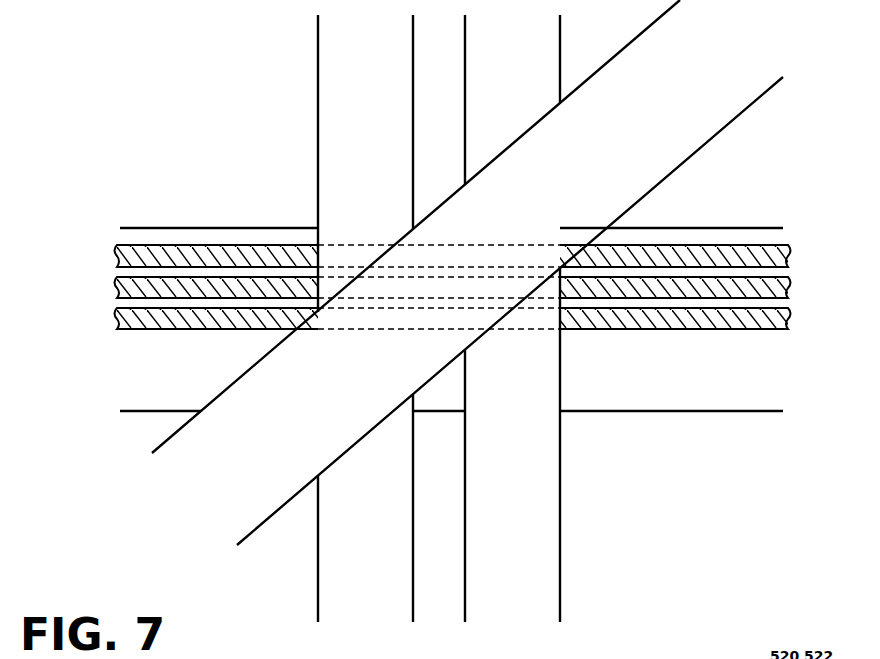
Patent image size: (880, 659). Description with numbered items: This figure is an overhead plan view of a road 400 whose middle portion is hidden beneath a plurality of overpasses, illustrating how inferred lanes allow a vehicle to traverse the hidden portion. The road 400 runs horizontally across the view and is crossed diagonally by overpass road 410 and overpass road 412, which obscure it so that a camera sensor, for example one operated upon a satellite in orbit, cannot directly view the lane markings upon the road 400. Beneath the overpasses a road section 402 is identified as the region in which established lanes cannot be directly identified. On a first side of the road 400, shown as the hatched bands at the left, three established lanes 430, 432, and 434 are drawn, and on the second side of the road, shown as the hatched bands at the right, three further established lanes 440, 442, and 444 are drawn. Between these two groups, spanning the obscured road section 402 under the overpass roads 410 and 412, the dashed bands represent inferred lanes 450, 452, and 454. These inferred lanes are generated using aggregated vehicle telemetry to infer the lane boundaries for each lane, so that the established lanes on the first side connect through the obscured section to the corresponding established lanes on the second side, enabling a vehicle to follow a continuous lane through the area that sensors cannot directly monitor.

The road 400 is at (707, 370).
The road section 402 is at (513, 376).
The overpass road 410 is at (522, 552).
The overpass road 412 is at (348, 570).
The established lane 430 is at (117, 258).
The established lane 432 is at (117, 288).
The established lane 434 is at (117, 319).
The established lane 440 is at (790, 319).
The established lane 442 is at (790, 288).
The established lane 444 is at (790, 257).
The inferred lane 450 is at (332, 250).
The inferred lane 452 is at (378, 288).
The inferred lane 454 is at (412, 317).